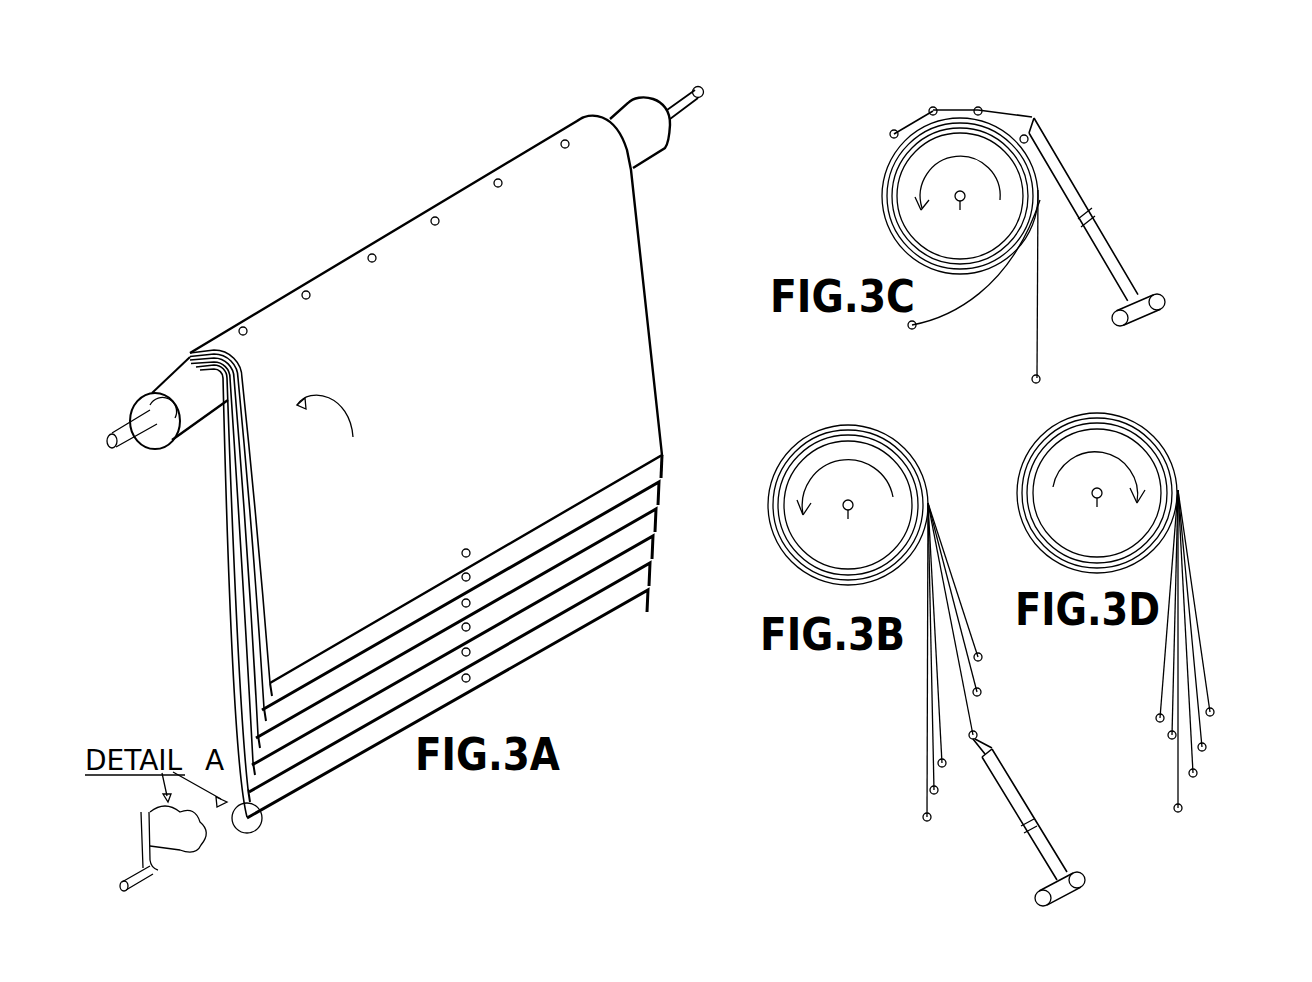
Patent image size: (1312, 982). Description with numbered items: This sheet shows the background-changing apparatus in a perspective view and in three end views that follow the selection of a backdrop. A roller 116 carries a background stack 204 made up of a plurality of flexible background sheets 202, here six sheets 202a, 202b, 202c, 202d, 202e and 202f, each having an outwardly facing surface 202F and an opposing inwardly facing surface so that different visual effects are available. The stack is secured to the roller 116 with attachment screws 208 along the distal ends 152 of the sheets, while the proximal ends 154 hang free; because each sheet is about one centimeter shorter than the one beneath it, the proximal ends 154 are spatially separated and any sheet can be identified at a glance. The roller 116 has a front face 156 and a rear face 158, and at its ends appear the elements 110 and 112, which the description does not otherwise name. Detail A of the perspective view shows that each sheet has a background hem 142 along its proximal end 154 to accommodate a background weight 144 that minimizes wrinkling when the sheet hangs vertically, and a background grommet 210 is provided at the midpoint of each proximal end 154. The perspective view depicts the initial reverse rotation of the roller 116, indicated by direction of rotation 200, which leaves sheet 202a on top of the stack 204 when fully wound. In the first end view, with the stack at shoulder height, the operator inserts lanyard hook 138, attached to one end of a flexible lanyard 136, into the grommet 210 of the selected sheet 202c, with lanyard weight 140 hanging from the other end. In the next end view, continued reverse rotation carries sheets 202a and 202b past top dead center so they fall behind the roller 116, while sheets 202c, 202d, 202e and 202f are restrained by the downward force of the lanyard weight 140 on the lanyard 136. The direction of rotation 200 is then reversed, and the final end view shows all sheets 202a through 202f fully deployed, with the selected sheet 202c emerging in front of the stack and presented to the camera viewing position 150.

In FIG. 3A, the shaft 110 is at (112, 448).
In FIG. 3C, the shaft 110 is at (956, 218).
In FIG. 3B, the shaft 110 is at (854, 526).
In FIG. 3D, the shaft 110 is at (1099, 515).
In FIG. 3A, the shaft end 112 is at (703, 97).
In FIG. 3A, the roller 116 is at (163, 435).
In FIG. 3C, the roller 116 is at (907, 222).
In FIG. 3B, the roller 116 is at (807, 542).
In FIG. 3D, the roller 116 is at (1050, 523).
In FIG. 3C, the lanyard 136 is at (1112, 253).
In FIG. 3B, the lanyard 136 is at (1030, 843).
In FIG. 3C, the lanyard hook 138 is at (905, 117).
In FIG. 3B, the lanyard hook 138 is at (979, 745).
In FIG. 3C, the lanyard weight 140 is at (1133, 283).
In FIG. 3B, the lanyard weight 140 is at (1085, 878).
In FIG. 3A, the background hem 142 is at (143, 820).
In FIG. 3A, the background weight 144 is at (152, 872).
In FIG. 3A, the camera viewing position 150 is at (426, 467).
In FIG. 3D, the camera viewing position 150 is at (1305, 632).
In FIG. 3A, the distal ends 152 is at (463, 188).
In FIG. 3A, the proximal ends 154 is at (592, 495).
In FIG. 3A, the front face 156 is at (657, 140).
In FIG. 3B, the front face 156 is at (935, 425).
In FIG. 3B, the rear face 158 is at (780, 507).
In FIG. 3A, the direction of rotation 200 is at (190, 361).
In FIG. 3C, the direction of rotation 200 is at (921, 174).
In FIG. 3B, the direction of rotation 200 is at (810, 480).
In FIG. 3D, the direction of rotation 200 is at (1123, 462).
In FIG. 3A, the background sheets 202 is at (182, 838).
In FIG. 3A, the outwardly facing surface 202F is at (385, 482).
In FIG. 3A, the background sheet 202a is at (287, 653).
In FIG. 3C, the background sheet 202a is at (1032, 377).
In FIG. 3B, the background sheet 202a is at (982, 658).
In FIG. 3D, the background sheet 202a is at (1171, 740).
In FIG. 3A, the background sheet 202b is at (277, 678).
In FIG. 3C, the background sheet 202b is at (909, 328).
In FIG. 3B, the background sheet 202b is at (981, 693).
In FIG. 3D, the background sheet 202b is at (1158, 722).
In FIG. 3A, the selected background sheet 202c is at (272, 688).
In FIG. 3C, the selected background sheet 202c is at (890, 131).
In FIG. 3B, the selected background sheet 202c is at (977, 735).
In FIG. 3D, the selected background sheet 202c is at (1214, 712).
In FIG. 3A, the background sheet 202d is at (267, 722).
In FIG. 3C, the background sheet 202d is at (982, 109).
In FIG. 3B, the background sheet 202d is at (938, 762).
In FIG. 3D, the background sheet 202d is at (1206, 747).
In FIG. 3A, the background sheet 202e is at (262, 745).
In FIG. 3C, the background sheet 202e is at (997, 115).
In FIG. 3B, the background sheet 202e is at (930, 789).
In FIG. 3D, the background sheet 202e is at (1197, 775).
In FIG. 3A, the background sheet 202f is at (257, 777).
In FIG. 3C, the background sheet 202f is at (1029, 140).
In FIG. 3B, the background sheet 202f is at (923, 817).
In FIG. 3D, the background sheet 202f is at (1181, 810).
In FIG. 3A, the background stack 204 is at (190, 353).
In FIG. 3C, the background stack 204 is at (893, 177).
In FIG. 3B, the background stack 204 is at (790, 452).
In FIG. 3D, the background stack 204 is at (1020, 497).
In FIG. 3A, the attachment screws 208 is at (435, 226).
In FIG. 3A, the background grommet 210 is at (462, 549).